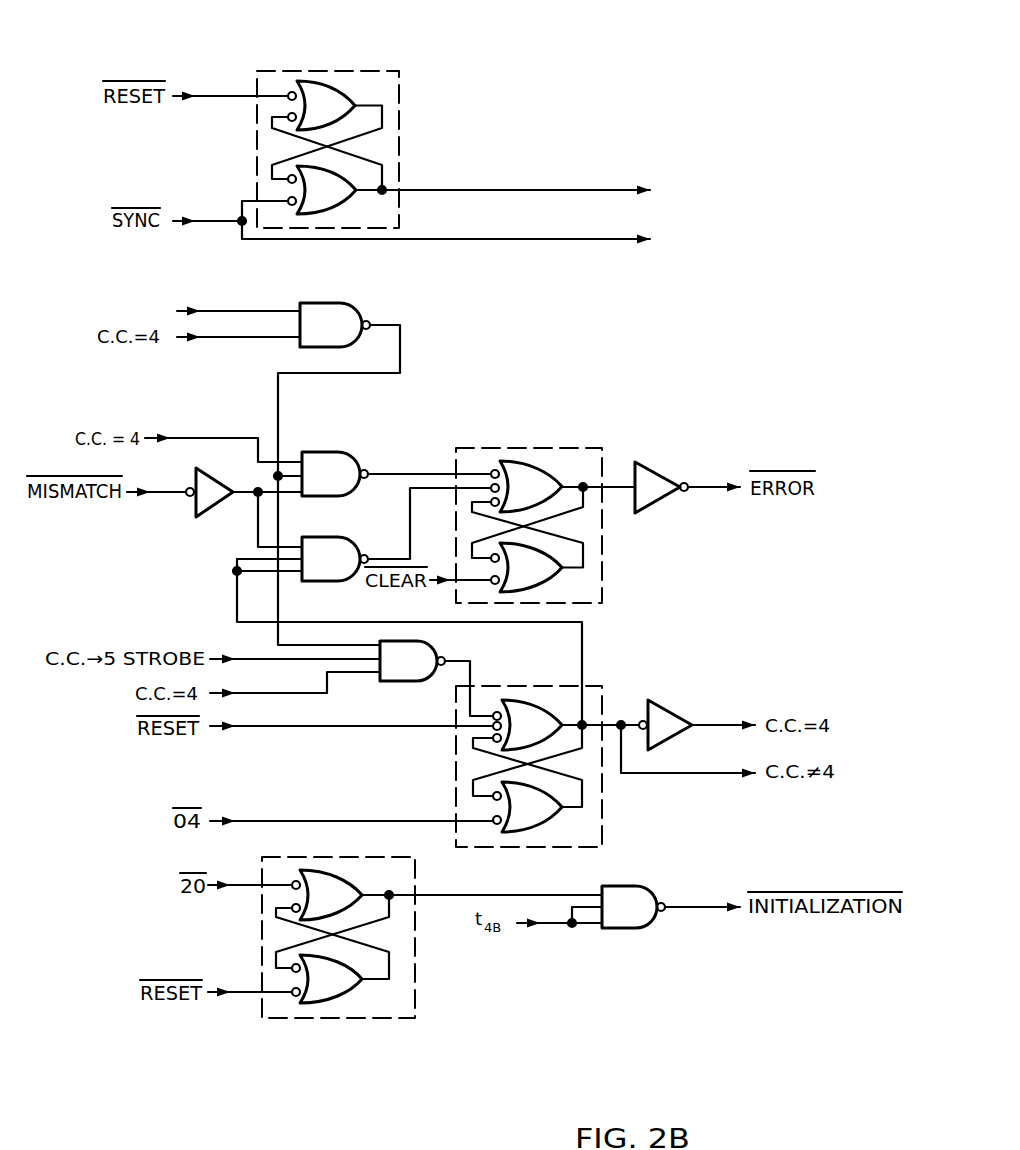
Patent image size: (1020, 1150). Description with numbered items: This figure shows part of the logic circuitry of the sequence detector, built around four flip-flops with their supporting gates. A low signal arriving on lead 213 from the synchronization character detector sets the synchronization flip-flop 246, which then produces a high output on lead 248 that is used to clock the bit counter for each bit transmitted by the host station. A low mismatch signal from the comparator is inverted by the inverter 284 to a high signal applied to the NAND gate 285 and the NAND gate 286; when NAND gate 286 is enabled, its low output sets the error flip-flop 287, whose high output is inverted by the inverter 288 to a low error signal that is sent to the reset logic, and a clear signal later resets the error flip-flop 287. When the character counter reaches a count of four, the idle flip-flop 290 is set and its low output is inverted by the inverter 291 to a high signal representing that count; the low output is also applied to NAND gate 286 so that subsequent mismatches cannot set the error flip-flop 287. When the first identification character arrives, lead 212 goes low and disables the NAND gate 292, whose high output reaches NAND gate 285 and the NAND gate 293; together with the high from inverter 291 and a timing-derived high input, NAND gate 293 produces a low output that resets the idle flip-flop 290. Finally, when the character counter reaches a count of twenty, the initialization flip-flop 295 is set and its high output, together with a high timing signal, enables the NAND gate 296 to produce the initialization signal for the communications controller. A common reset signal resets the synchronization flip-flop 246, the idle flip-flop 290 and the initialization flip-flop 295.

The synchronization flip-flop 246 is at (334, 71).
The lead 248 is at (533, 190).
The lead 213 is at (228, 218).
The lead 212 is at (243, 311).
The NAND gate 292 is at (352, 303).
The NAND gate 285 is at (340, 452).
The NAND gate 286 is at (338, 537).
The inverter 284 is at (212, 507).
The error flip-flop 287 is at (507, 448).
The inverter 288 is at (652, 503).
The NAND gate 293 is at (430, 642).
The idle flip-flop 290 is at (602, 686).
The inverter 291 is at (668, 712).
The initialization flip-flop 295 is at (317, 1018).
The NAND gate 296 is at (632, 930).